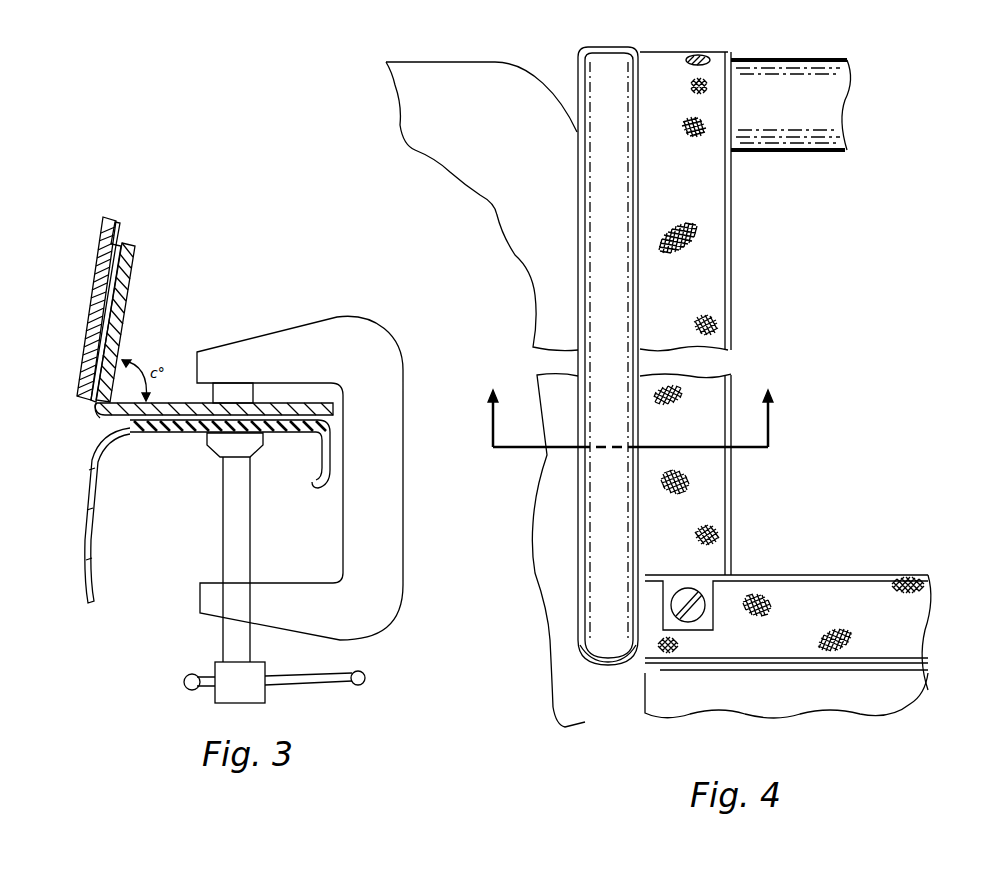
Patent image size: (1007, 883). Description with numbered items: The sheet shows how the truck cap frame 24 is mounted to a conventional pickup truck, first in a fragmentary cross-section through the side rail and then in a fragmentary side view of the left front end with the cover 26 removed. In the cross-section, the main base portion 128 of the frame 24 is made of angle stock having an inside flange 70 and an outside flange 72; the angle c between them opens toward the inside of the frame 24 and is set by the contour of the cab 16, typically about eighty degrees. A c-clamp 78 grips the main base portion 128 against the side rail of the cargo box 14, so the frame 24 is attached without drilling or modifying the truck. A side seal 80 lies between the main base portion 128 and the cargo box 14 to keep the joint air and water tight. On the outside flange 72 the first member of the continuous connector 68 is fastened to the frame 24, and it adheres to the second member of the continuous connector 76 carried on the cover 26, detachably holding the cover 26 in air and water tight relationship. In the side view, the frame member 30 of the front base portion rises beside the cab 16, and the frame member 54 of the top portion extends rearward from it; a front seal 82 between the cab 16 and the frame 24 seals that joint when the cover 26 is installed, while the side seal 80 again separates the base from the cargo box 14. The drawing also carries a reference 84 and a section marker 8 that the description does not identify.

In FIG. 3, the cargo box 14 is at (84, 507).
In FIG. 4, the cargo box 14 is at (855, 695).
In FIG. 4, the cab 16 is at (490, 95).
In FIG. 4, the frame 24 is at (804, 356).
In FIG. 3, the cover 26 is at (107, 242).
In FIG. 4, the frame member 30 is at (726, 279).
In FIG. 4, the frame member 54 is at (797, 95).
In FIG. 3, the first member of the continuous connector 68 is at (112, 288).
In FIG. 4, the first member of the continuous connector 68 is at (695, 182).
In FIG. 3, the inside flange 70 is at (277, 410).
In FIG. 3, the outside flange 72 is at (128, 262).
In FIG. 3, the second member of the continuous connector 76 is at (100, 338).
In FIG. 3, the c-clamps 78 is at (337, 345).
In FIG. 3, the side seal 80 is at (322, 430).
In FIG. 4, the side seal 80 is at (735, 667).
In FIG. 4, the front seal 82 is at (620, 650).
In FIG. 4, the fastener 84 is at (697, 53).
In FIG. 3, the main base portion 128 is at (94, 419).
In FIG. 4, the section line 8- 8 is at (630, 409).